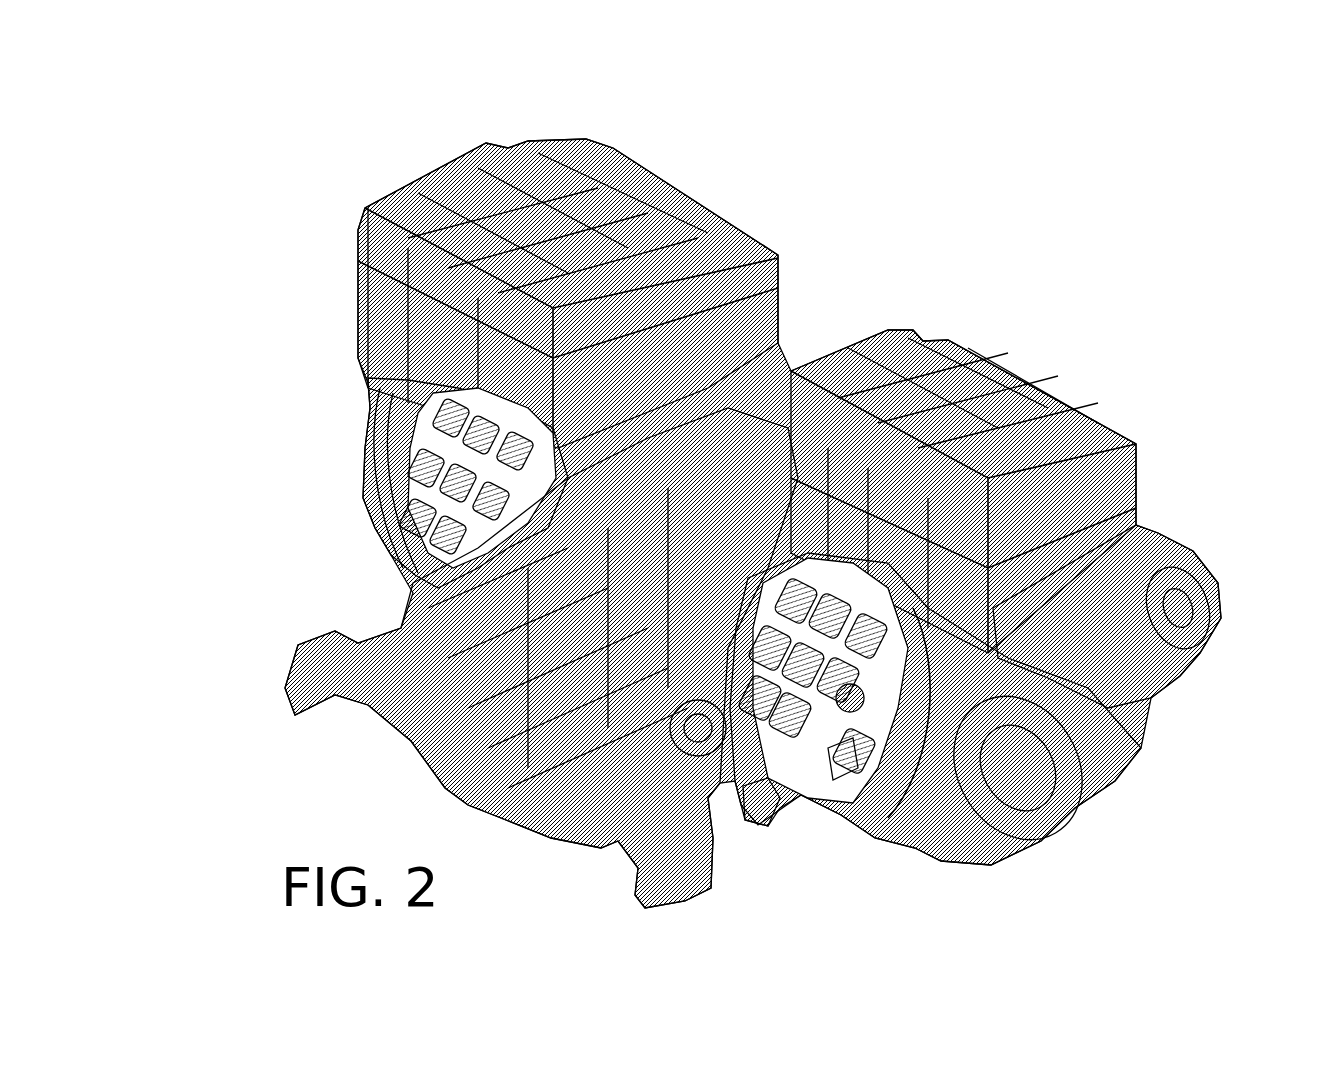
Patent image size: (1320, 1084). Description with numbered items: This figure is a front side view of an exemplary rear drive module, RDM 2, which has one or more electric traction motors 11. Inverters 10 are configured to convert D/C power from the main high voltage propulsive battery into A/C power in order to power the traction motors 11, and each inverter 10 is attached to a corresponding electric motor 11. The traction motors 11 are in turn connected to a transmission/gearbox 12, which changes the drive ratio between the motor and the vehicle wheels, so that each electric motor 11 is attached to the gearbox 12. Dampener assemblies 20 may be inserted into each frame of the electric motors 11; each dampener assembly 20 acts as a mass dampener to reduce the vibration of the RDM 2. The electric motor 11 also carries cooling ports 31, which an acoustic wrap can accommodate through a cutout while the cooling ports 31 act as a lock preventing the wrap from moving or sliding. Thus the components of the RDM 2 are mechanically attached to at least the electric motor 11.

The rear drive module 2 is at (247, 142).
The inverter 10 is at (951, 330).
The electric traction motor 11 is at (355, 468).
The transmission/gearbox 12 is at (410, 612).
The dampener assembly 20 is at (1193, 540).
The cooling port 31 is at (757, 815).